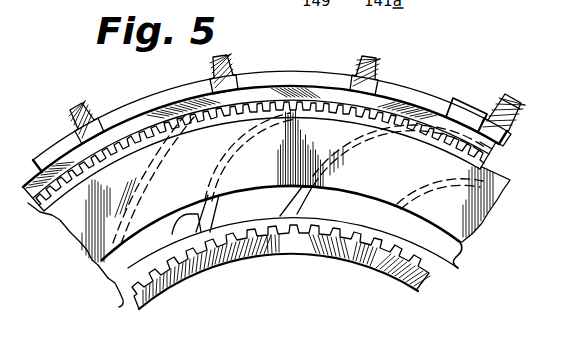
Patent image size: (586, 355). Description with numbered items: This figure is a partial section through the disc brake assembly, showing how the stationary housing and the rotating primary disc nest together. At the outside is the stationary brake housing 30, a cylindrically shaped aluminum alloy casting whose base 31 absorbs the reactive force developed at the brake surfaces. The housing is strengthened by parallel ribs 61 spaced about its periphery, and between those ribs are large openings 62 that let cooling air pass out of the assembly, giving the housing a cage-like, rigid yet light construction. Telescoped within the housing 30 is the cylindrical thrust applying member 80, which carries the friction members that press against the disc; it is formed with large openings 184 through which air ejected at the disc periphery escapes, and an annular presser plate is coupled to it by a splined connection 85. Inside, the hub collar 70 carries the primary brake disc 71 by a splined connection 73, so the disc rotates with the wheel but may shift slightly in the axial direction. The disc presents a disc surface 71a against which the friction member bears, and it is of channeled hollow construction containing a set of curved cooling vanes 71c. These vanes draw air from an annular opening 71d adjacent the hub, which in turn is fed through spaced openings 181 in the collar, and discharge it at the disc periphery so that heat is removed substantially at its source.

The stationary brake housing 30 is at (507, 100).
The base 31 is at (425, 87).
The parallel ribs 61 is at (70, 114).
The opening 62 is at (118, 113).
The collar 70 is at (161, 300).
The primary brake disc 71 is at (258, 211).
The disc surface 71a is at (190, 175).
The vanes 71c is at (383, 206).
The annular opening 71d is at (459, 254).
The splined connection 73 is at (122, 300).
The thrust applying member 80 is at (450, 107).
The splined connection 85 is at (492, 158).
The spaced openings 181 is at (276, 256).
The large openings 184 is at (263, 97).